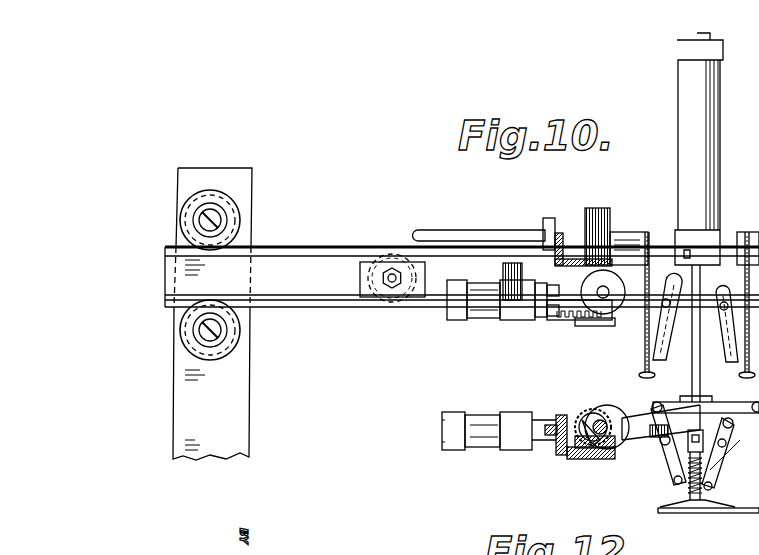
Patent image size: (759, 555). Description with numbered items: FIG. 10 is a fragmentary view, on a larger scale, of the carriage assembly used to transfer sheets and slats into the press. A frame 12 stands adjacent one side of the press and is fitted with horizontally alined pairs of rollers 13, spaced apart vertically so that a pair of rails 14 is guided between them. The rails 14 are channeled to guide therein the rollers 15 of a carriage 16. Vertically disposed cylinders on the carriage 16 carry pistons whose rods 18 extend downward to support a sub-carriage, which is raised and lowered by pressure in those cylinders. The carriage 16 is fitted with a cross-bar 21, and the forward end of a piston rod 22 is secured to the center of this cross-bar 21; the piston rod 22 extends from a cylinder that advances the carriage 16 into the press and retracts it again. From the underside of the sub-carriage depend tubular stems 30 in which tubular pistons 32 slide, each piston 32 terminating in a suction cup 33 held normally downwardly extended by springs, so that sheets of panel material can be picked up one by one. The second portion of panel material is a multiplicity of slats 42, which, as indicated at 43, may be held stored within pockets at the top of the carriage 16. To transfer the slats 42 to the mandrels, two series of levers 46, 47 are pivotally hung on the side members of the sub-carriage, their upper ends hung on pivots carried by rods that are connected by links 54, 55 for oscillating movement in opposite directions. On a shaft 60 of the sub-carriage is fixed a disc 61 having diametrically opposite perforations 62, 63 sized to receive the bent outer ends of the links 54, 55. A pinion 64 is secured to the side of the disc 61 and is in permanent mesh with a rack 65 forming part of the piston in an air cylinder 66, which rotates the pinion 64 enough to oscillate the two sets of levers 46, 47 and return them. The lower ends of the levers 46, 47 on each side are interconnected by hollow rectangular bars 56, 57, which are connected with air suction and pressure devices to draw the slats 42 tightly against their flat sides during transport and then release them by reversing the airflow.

The frame 12 is at (252, 404).
The rollers 13 is at (240, 205).
The rails 14 is at (332, 256).
The rollers 15 is at (394, 255).
The carriage 16 is at (432, 262).
The rods 18 is at (690, 378).
The cross-bar 21 is at (562, 236).
The piston rod 22 is at (498, 229).
The tubular stems 30 is at (676, 474).
The tubular pistons 32 is at (695, 513).
The suction cup 33 is at (705, 512).
The slats 42 is at (600, 208).
The pockets 43 is at (615, 236).
The levers 46 is at (645, 332).
The levers 47 is at (724, 452).
The link 54 is at (660, 402).
The link 55 is at (645, 442).
The hollow rectangular bar 56 is at (664, 513).
The hollow rectangular bar 57 is at (713, 486).
The shaft 60 is at (610, 406).
The disc 61 is at (582, 416).
The perforation 62 is at (593, 408).
The perforation 63 is at (610, 460).
The pinion 64 is at (582, 460).
The rack 65 is at (556, 455).
The air cylinder 66 is at (505, 412).